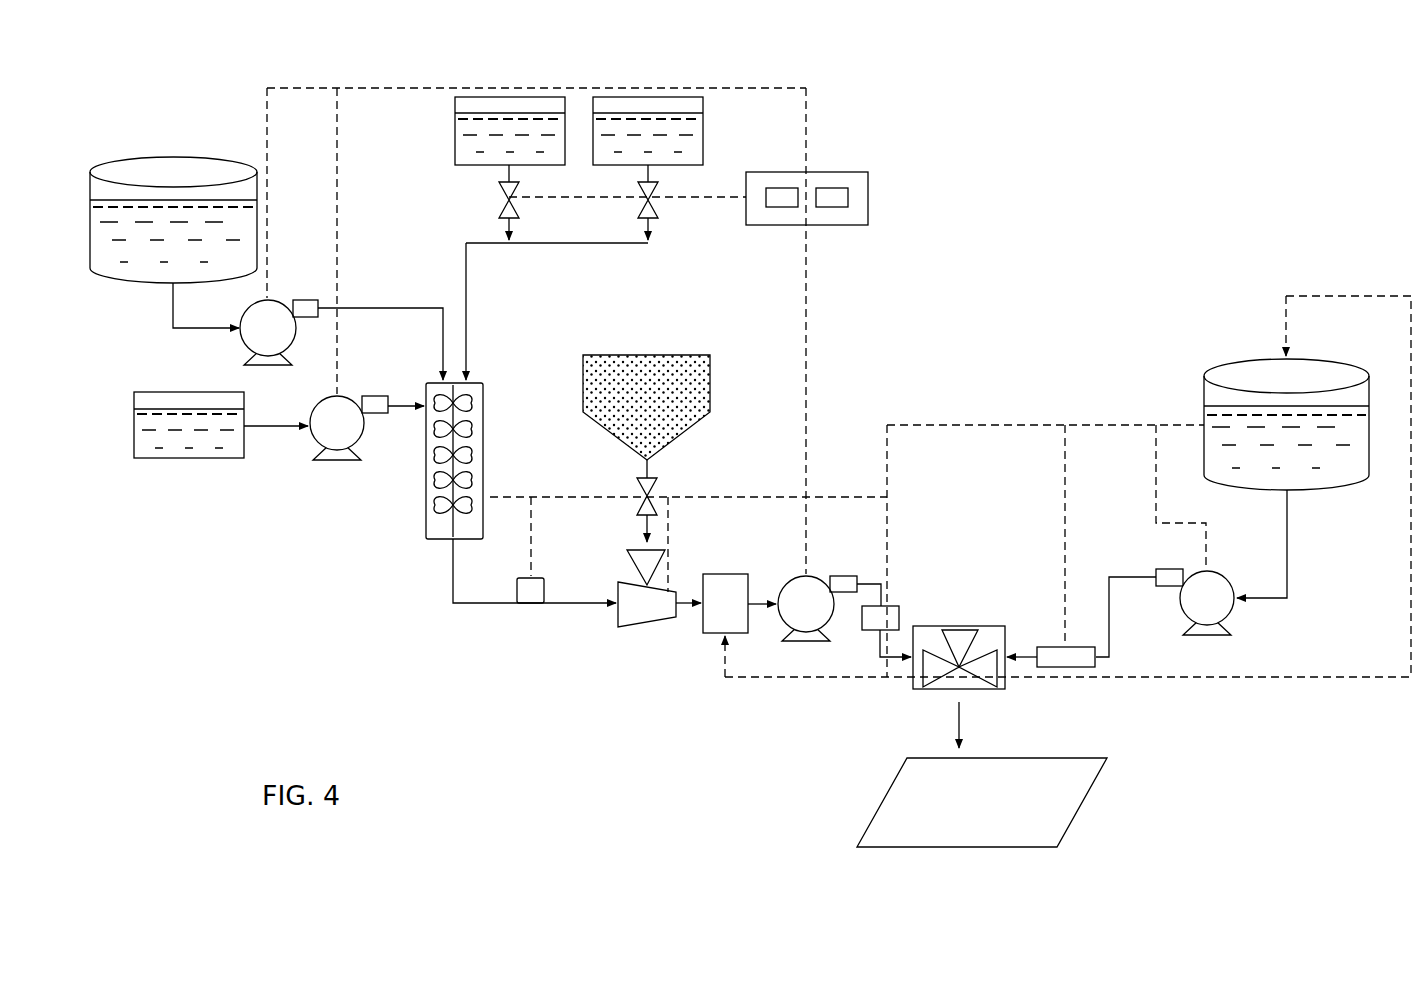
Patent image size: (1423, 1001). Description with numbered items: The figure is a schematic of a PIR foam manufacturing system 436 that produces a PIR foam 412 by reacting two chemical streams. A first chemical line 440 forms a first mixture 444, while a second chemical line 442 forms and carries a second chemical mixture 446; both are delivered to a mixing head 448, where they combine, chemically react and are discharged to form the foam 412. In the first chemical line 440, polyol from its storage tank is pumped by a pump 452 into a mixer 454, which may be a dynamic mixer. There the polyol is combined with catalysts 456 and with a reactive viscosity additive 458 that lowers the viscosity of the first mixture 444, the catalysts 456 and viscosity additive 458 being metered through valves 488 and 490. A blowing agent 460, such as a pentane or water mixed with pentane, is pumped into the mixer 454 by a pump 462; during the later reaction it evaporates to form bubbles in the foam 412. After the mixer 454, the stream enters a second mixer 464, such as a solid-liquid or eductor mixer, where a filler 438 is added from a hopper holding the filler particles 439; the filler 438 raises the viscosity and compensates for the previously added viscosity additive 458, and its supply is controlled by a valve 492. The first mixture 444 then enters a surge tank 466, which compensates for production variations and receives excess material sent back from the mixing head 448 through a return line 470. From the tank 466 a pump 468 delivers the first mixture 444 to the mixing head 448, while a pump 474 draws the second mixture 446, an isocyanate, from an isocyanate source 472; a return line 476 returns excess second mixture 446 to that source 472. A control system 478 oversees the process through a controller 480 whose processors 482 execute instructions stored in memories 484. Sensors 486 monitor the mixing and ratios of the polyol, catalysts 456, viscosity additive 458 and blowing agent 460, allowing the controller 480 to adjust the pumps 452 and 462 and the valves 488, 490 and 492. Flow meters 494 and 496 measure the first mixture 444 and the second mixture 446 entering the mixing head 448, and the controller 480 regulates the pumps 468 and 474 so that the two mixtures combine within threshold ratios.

The PIR foam 412 is at (1085, 802).
The PIR foam manufacturing system 436 is at (1098, 162).
The filler 438 is at (673, 388).
The abrasive particles 439 is at (658, 355).
The first chemical line 440 is at (343, 652).
The second chemical line 442 is at (1247, 722).
The first mixture 444 is at (882, 593).
The second chemical mixture 446 is at (1109, 615).
The mixing head 448 is at (992, 627).
The pump 452 is at (272, 302).
The mixer 454 is at (483, 457).
The catalysts 456 is at (457, 135).
The reactive viscosity additive 458 is at (695, 135).
The blowing agent 460 is at (168, 450).
The pump 462 is at (342, 398).
The mixer 464 is at (647, 627).
The tank 466 is at (725, 573).
The pump 468 is at (810, 577).
The return line 470 is at (822, 678).
The isocyanate source 472 is at (1237, 372).
The pump 474 is at (1202, 570).
The return line 476 is at (1205, 680).
The control system 478 is at (773, 137).
The controller 480 is at (840, 203).
The processors 482 is at (783, 207).
The memories 484 is at (848, 196).
The sensors 486 is at (517, 590).
The valve 488 is at (500, 193).
The valve 490 is at (177, 152).
The valve 492 is at (653, 490).
The flow meter 494 is at (873, 632).
The flow meter 496 is at (1067, 668).